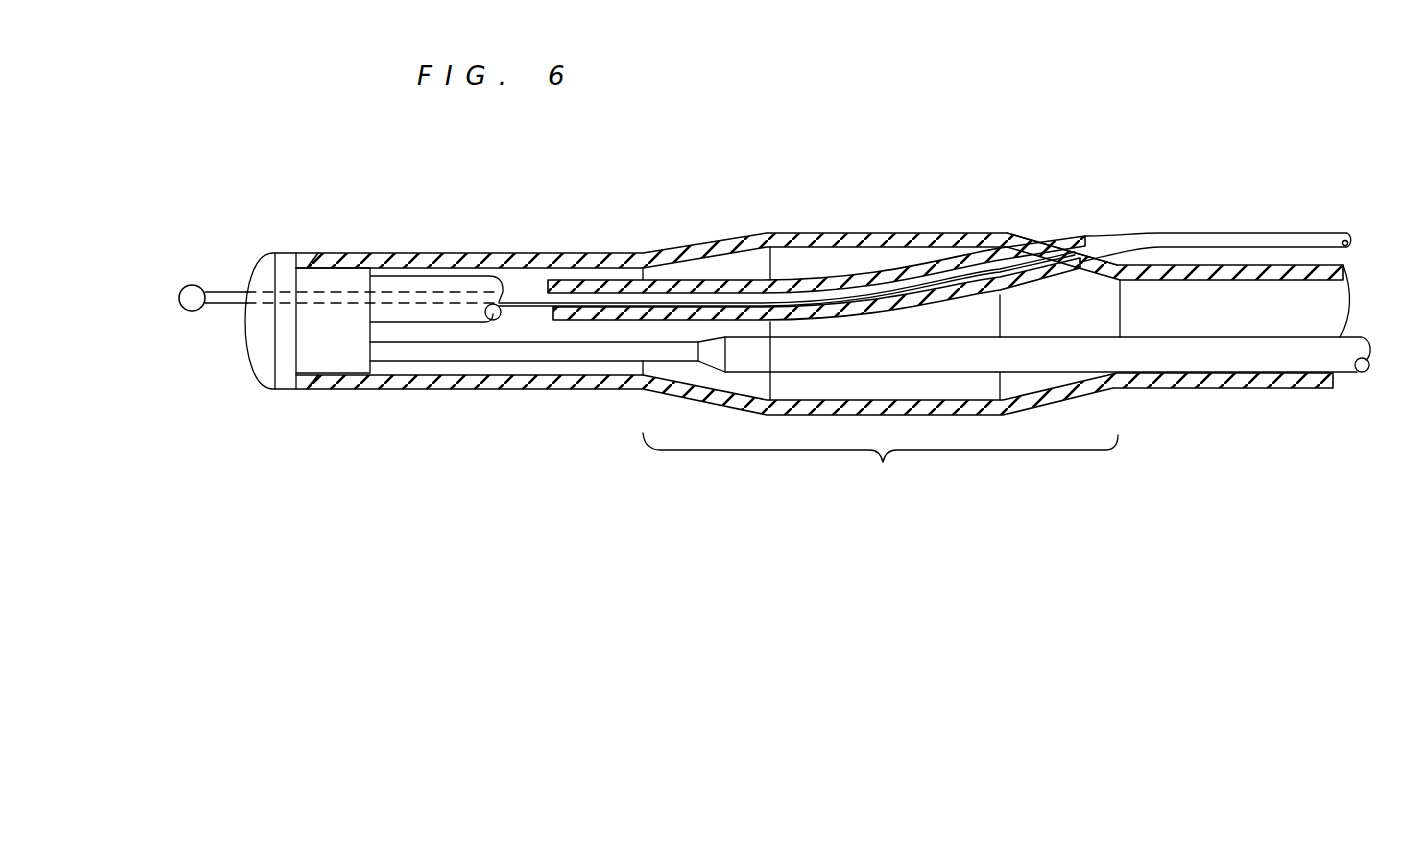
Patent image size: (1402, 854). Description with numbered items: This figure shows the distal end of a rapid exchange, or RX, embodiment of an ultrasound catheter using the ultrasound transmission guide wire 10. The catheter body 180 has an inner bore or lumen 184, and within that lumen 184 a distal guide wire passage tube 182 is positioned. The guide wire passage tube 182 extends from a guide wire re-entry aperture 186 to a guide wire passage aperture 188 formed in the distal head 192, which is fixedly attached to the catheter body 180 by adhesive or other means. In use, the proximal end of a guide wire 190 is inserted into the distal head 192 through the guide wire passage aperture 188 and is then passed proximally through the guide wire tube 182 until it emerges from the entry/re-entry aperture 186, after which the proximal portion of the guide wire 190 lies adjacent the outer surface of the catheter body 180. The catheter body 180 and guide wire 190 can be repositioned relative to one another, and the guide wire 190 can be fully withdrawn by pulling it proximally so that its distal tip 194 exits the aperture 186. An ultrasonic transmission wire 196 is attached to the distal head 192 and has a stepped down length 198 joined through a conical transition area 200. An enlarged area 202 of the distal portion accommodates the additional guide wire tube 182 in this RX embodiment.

The ultrasound transmission member 10 is at (1313, 235).
The catheter body 180 is at (1310, 387).
The distal guide wire passage tube 182 is at (707, 288).
The lumen 184 is at (1213, 320).
The guide wire re-entry aperture 186 is at (1073, 250).
The guide wire passage aperture 188 is at (338, 290).
The guide wire 190 is at (228, 290).
The distal head 192 is at (262, 345).
The distal tip 194 is at (177, 297).
The ultrasonic transmission wire 196 is at (1170, 360).
The stepped down length 198 is at (578, 362).
The conical transition area 200 is at (712, 358).
The enlarged area 202 is at (880, 466).